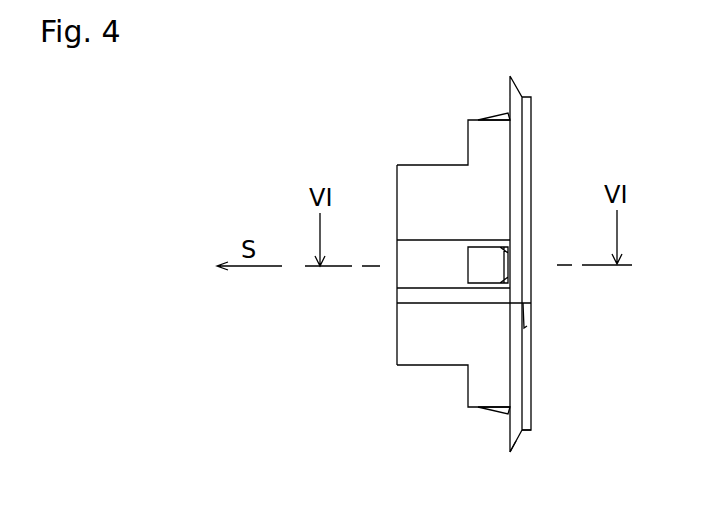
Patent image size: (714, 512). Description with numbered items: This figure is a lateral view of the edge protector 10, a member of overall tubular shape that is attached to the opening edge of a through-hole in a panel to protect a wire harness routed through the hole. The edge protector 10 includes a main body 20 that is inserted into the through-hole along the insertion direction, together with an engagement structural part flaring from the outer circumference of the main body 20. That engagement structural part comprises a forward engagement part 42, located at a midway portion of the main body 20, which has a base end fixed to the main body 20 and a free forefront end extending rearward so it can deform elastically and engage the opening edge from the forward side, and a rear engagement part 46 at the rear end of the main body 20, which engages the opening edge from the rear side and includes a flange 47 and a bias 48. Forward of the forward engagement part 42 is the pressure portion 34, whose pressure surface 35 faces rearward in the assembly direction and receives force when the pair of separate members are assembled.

The edge protector 10 is at (343, 106).
The main body 20 is at (382, 342).
The pressure portion 34 is at (426, 272).
The pressure surface 35 is at (408, 163).
The forward engagement part 42 is at (490, 118).
The rear engagement part 46 is at (533, 85).
The flange 47 is at (528, 434).
The bias 48 is at (516, 441).